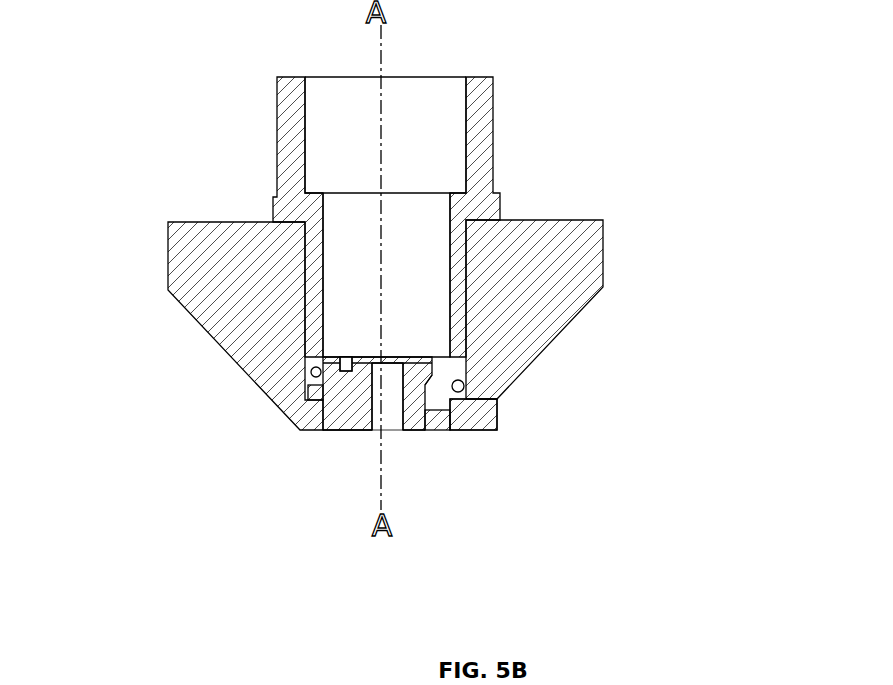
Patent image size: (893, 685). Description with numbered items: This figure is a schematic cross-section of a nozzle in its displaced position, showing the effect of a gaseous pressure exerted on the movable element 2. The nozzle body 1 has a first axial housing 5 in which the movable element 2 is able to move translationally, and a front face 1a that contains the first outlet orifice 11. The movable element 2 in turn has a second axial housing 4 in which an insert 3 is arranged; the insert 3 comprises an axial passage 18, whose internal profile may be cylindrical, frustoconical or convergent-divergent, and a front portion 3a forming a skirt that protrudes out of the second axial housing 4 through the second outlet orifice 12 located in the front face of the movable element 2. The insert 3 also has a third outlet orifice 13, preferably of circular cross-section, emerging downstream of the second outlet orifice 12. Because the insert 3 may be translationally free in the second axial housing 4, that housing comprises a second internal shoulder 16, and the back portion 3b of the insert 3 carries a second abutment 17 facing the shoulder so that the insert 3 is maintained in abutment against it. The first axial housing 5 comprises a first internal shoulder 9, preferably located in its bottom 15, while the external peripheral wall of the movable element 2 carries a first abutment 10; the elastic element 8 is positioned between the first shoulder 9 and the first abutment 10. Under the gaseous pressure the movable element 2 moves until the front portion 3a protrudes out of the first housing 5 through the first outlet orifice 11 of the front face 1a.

The nozzle body 1 is at (560, 250).
The front face of the nozzle body 1a is at (468, 427).
The movable element 2 is at (322, 233).
The insert 3 is at (355, 410).
The front portion 3a is at (420, 428).
The back portion 3b is at (425, 362).
The second axial housing 4 is at (398, 255).
The first axial housing 5 is at (398, 166).
The elastic element 8 is at (318, 388).
The first internal shoulder 9 is at (458, 373).
The first abutment 10 is at (307, 370).
The first outlet orifice 11 is at (335, 427).
The second outlet orifice 12 is at (428, 412).
The third outlet orifice 13 is at (393, 430).
The bottom of the first housing 15 is at (467, 399).
The second internal shoulder 16 is at (345, 362).
The second abutment 17 is at (346, 364).
The axial passage 18 is at (380, 415).